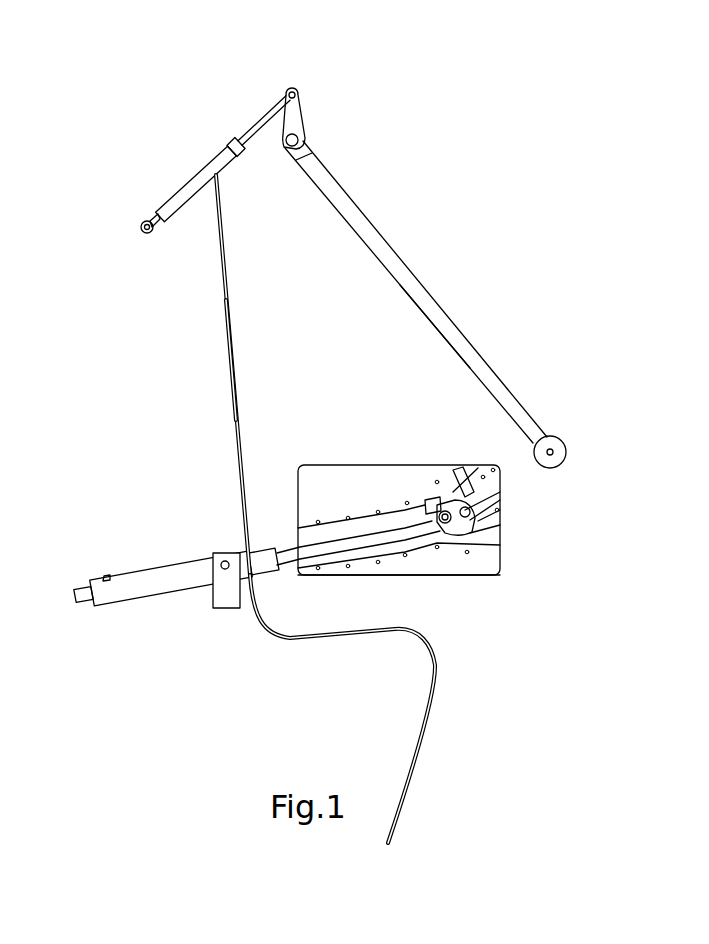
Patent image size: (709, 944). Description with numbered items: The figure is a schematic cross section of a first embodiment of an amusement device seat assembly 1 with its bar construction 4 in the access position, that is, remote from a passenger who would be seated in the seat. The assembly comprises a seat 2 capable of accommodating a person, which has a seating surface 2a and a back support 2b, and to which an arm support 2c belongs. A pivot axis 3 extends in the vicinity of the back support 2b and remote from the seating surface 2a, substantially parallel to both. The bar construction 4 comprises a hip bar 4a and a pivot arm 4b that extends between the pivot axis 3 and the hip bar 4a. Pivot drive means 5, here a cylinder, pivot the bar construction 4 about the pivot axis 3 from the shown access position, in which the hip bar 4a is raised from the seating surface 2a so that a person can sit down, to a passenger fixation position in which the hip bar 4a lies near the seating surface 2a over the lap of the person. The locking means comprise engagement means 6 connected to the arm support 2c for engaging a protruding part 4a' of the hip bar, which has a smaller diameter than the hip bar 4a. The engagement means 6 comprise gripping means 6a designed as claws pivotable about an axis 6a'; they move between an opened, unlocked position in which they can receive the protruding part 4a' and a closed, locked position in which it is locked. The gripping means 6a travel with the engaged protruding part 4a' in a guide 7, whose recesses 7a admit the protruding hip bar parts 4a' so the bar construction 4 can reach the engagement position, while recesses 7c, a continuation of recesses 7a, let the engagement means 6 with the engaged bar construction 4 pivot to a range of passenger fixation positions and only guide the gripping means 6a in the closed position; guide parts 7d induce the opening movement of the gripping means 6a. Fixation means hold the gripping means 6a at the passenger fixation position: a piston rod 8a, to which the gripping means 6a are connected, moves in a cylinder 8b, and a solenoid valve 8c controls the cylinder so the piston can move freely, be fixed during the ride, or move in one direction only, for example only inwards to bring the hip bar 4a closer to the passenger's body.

The amusement device seat assembly 1 is at (467, 244).
The seat 2 is at (220, 378).
The seating surface 2a is at (342, 635).
The back support 2b is at (243, 408).
The arm support 2c is at (472, 563).
The pivot axis 3 is at (297, 93).
The bar construction 4 is at (362, 262).
The hip bar 4a is at (585, 452).
The protruding part of the hip bar 4a' is at (573, 420).
The pivot arm 4b is at (473, 363).
The pivot drive means 5 is at (192, 187).
The engagement means 6 is at (410, 450).
The gripping means 6a is at (506, 463).
The axis 6a' is at (394, 464).
The guide 7 is at (487, 537).
The recesses 7a is at (500, 487).
The recesses 7c is at (330, 532).
The guide parts 7d is at (488, 473).
The piston rod 8a is at (287, 537).
The cylinder 8b is at (157, 582).
The solenoid valve 8c is at (224, 595).